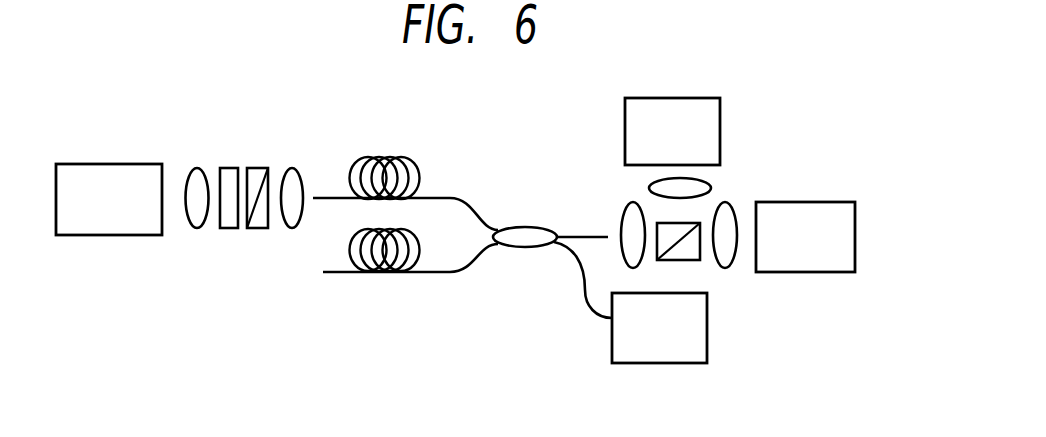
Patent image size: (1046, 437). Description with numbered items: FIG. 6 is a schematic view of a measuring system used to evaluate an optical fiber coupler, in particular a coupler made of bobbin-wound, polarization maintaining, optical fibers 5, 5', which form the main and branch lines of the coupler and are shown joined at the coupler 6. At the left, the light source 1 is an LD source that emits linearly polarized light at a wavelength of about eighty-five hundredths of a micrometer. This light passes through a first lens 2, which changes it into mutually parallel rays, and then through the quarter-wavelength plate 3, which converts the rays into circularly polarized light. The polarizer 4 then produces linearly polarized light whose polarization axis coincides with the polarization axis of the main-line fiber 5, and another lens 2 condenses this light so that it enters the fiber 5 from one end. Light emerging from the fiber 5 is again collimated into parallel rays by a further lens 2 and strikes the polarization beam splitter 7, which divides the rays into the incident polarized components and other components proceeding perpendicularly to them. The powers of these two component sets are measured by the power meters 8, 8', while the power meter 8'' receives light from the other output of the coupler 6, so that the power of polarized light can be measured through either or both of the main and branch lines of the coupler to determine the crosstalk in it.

The light source 1 is at (115, 164).
The lens 2 is at (196, 180).
The quarter-wavelength plate 3 is at (223, 177).
The polarizer 4 is at (258, 225).
The bobbin-wound polarization maintaining optical fiber 5 is at (397, 153).
The bobbin-wound polarization maintaining optical fiber 5' is at (386, 279).
The optical fiber coupler 6 is at (528, 237).
The polarization beam splitter 7 is at (688, 248).
The power meter 8 is at (805, 209).
The power meter 8' is at (699, 123).
The power meter 8'' is at (649, 353).